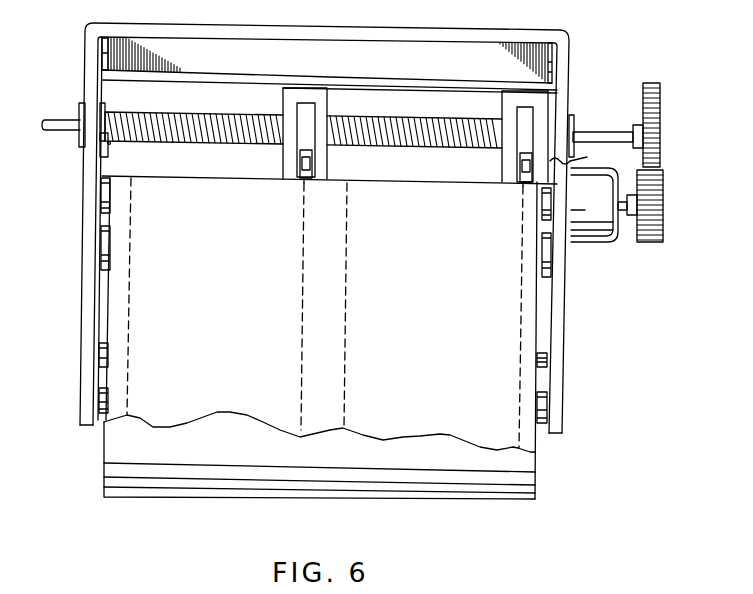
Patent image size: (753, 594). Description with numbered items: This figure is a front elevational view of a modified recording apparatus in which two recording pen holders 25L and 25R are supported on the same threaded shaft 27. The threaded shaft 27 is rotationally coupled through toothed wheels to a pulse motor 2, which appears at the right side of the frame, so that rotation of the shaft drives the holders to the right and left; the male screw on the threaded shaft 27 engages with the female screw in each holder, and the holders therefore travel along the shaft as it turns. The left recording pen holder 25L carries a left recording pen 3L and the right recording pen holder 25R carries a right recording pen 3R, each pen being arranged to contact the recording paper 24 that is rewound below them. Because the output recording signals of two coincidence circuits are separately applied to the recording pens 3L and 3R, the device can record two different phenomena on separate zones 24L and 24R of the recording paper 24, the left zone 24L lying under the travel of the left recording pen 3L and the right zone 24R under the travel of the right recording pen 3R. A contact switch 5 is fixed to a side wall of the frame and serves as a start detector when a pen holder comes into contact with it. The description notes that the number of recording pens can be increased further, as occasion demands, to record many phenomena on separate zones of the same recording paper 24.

The pulse motor 2 is at (600, 243).
The left recording pen 3L is at (300, 163).
The right recording pen 3R is at (520, 167).
The contact switch 5 is at (97, 150).
The recording paper 24 is at (113, 315).
The left recording zone 24L is at (302, 295).
The right recording zone 24R is at (520, 297).
The left recording pen holder 25L is at (283, 103).
The right recording pen holder 25R is at (502, 105).
The threaded shaft 27 is at (175, 144).